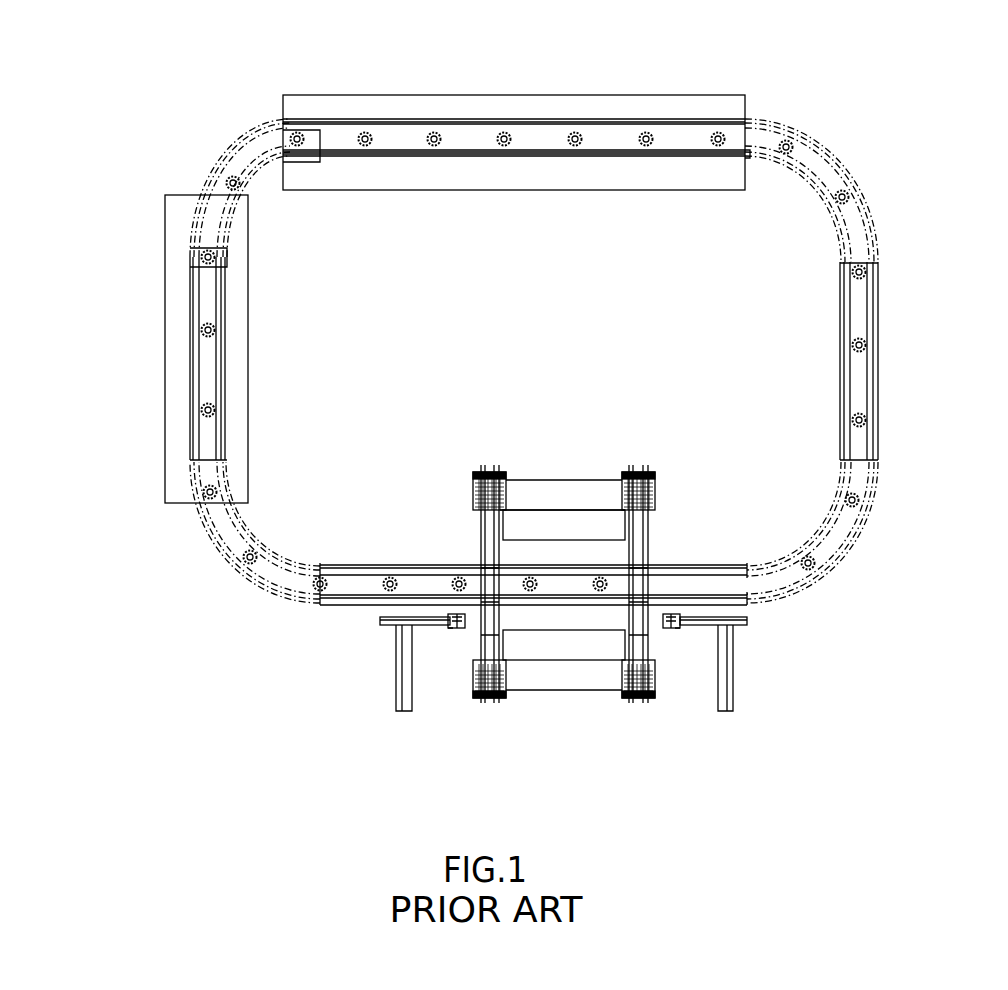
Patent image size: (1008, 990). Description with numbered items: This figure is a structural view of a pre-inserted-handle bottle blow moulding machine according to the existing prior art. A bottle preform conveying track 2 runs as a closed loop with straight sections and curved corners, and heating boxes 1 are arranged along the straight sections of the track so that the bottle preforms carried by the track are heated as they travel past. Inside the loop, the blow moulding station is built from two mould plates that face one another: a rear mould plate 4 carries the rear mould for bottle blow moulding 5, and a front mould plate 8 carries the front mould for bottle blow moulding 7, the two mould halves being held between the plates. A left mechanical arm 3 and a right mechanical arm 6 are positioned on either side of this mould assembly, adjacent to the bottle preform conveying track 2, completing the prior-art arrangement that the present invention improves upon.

The heating box 1 is at (386, 108).
The bottle preform conveying track 2 is at (220, 547).
The left mechanical arm 3 is at (397, 663).
The rear mould plate 4 is at (515, 675).
The rear mould for bottle blow moulding 5 is at (614, 648).
The right mechanical arm 6 is at (727, 650).
The front mould for bottle blow moulding 7 is at (612, 520).
The front mould plate 8 is at (515, 495).